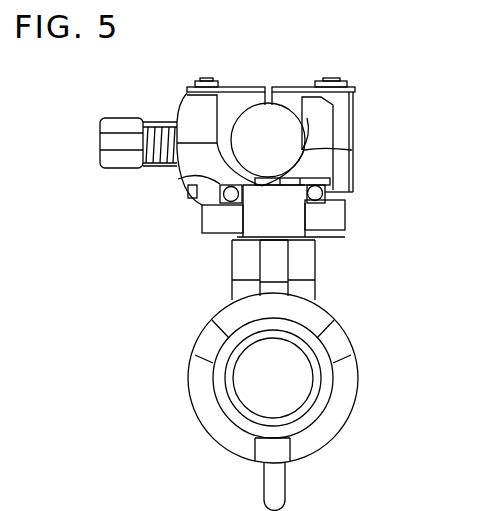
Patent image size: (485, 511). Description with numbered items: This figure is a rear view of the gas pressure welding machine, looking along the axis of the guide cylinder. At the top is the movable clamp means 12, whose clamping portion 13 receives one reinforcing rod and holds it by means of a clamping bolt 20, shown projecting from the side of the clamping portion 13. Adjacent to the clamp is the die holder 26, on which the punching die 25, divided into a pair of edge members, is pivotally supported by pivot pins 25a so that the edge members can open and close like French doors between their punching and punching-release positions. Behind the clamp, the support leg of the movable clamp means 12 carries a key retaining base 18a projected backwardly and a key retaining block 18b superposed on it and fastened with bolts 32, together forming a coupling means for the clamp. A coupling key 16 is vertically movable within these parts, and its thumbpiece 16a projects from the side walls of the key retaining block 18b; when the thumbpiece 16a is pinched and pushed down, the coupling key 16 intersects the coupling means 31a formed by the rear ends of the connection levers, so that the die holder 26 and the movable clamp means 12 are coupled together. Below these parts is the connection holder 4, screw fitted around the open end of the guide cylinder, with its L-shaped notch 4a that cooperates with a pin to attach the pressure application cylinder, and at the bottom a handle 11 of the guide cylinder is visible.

The clamping bolt 20 is at (108, 118).
The movable clamp means 12 is at (180, 108).
The punching die 25 is at (248, 87).
The pivot pins 25a is at (205, 81).
The clamping portion 13 is at (330, 103).
The die holder 26 is at (355, 125).
The coupling key 16 is at (352, 150).
The bolts 32 is at (183, 181).
The key retaining block 18b is at (258, 217).
The thumbpiece 16a is at (340, 207).
The coupling means 31a is at (240, 270).
The key retaining base 18a is at (276, 272).
The connection holder 4 is at (357, 388).
The L-shaped notch 4a is at (208, 338).
The handle 11 is at (278, 486).